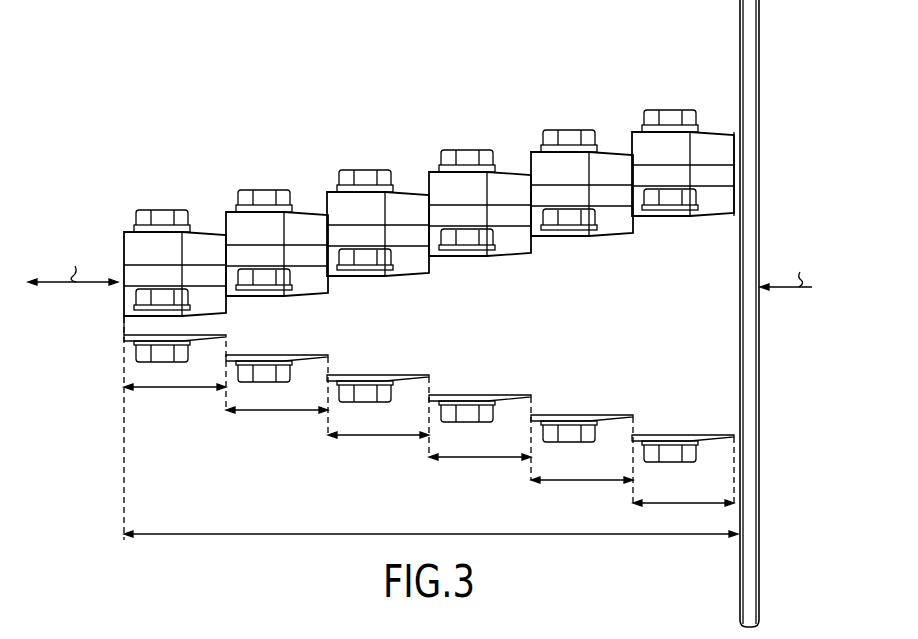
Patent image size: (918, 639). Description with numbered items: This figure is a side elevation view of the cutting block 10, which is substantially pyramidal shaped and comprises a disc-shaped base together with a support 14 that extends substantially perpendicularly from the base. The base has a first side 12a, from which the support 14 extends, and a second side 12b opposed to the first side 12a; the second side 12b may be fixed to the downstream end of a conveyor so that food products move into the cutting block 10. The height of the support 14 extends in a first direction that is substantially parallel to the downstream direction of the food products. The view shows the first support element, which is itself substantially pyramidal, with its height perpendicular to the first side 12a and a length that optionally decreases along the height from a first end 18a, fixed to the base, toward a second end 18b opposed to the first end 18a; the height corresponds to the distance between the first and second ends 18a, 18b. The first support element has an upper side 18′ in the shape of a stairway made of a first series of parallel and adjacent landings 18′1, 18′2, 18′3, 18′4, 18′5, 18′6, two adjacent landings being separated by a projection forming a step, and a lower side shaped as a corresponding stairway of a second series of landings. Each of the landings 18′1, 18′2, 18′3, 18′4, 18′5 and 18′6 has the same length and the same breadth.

The cutting block 10 is at (424, 313).
The first side of base 12a is at (740, 16).
The second side of base 12b is at (759, 16).
The support 14 is at (405, 221).
The upper side 18′ is at (405, 221).
The landing 18′1 is at (660, 220).
The landing 18′2 is at (581, 240).
The landing 18′3 is at (480, 260).
The landing 18′4 is at (379, 280).
The landing 18′5 is at (278, 300).
The landing 18′6 is at (142, 320).
The first end 18a is at (727, 340).
The second end 18b is at (127, 328).